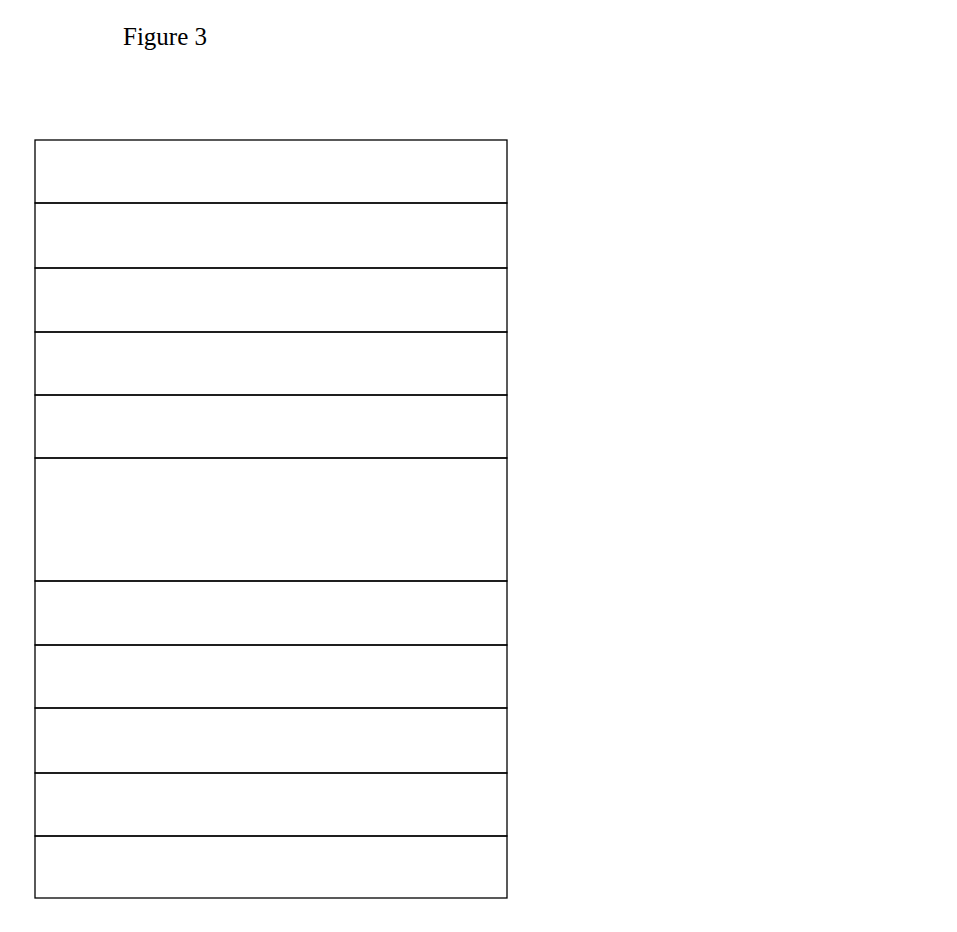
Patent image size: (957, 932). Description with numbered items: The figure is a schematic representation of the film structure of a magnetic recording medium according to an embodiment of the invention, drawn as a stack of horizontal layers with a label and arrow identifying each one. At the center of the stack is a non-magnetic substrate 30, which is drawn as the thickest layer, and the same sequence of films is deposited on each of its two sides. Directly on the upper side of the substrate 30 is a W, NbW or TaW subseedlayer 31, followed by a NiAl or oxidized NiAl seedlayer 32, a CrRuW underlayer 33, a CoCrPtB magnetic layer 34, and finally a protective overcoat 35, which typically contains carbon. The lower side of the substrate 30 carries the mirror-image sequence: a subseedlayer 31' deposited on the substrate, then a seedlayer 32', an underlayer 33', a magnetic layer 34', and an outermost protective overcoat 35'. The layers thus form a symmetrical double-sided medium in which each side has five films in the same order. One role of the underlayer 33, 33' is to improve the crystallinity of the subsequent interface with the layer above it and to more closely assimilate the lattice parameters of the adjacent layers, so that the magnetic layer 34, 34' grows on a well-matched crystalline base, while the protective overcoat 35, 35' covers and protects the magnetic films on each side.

The protective overcoat 35 is at (424, 171).
The magnetic layer 34 is at (421, 235).
The underlayer 33 is at (403, 300).
The seedlayer 32 is at (397, 363).
The subseedlayer 31 is at (413, 426).
The non-magnetic substrate 30 is at (603, 539).
The subseedlayer 31' is at (417, 613).
The seedlayer 32' is at (398, 676).
The underlayer 33' is at (407, 740).
The magnetic layer 34' is at (425, 804).
The protective overcoat 35' is at (428, 867).